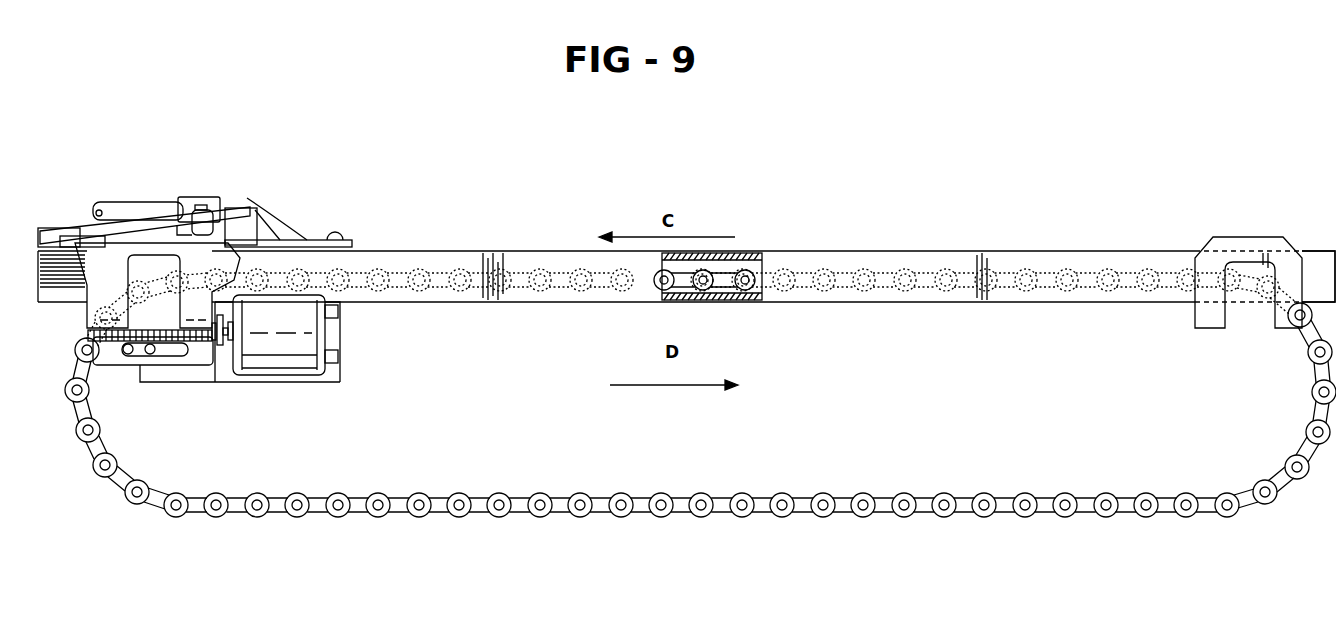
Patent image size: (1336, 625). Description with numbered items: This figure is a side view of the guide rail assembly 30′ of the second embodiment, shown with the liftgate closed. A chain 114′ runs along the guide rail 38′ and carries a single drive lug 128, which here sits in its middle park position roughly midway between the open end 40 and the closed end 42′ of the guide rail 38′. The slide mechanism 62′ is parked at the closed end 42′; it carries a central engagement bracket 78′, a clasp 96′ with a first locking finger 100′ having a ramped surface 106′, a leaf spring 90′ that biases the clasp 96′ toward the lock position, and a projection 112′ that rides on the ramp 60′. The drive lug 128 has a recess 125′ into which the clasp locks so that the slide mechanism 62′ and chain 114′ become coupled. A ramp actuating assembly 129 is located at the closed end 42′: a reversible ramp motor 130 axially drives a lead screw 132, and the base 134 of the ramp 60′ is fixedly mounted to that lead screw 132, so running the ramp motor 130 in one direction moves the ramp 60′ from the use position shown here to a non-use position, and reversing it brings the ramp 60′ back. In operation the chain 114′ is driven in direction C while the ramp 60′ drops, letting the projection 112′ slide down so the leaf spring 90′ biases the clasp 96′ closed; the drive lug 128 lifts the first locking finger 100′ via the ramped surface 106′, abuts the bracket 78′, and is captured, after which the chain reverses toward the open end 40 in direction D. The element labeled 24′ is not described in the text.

The guide rail assembly 30′ is at (114, 88).
The drive unit 24′ is at (134, 200).
The closed end 42′ is at (38, 232).
The clasp 96′ is at (69, 218).
The central engagement bracket 78′ is at (175, 255).
The projection 112′ is at (223, 213).
The leaf spring 90′ is at (255, 210).
The slide mechanism 62′ is at (348, 239).
The single drive lug 128 is at (747, 272).
The recess 125′ is at (765, 255).
The open end 40 is at (1327, 251).
The ramp 60′ is at (90, 297).
The ramped surface 106′ is at (270, 292).
The first locking finger 100′ is at (300, 282).
The guide rail 38′ is at (823, 305).
The lead screw 132 is at (197, 368).
The ramp actuating assembly 129 is at (234, 404).
The ramp motor 130 is at (297, 378).
The base 134 is at (92, 425).
The chain 114′ is at (645, 520).